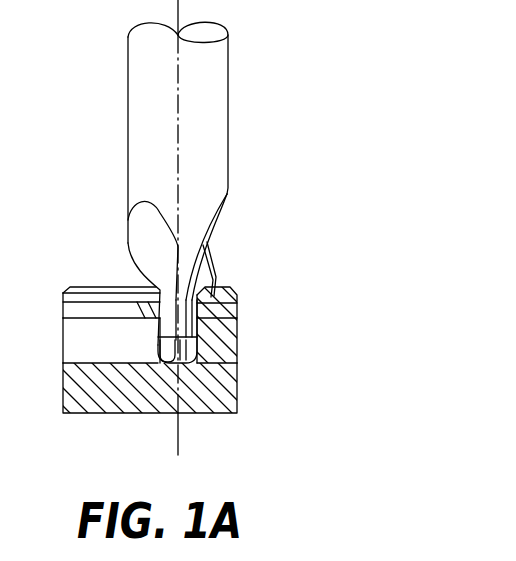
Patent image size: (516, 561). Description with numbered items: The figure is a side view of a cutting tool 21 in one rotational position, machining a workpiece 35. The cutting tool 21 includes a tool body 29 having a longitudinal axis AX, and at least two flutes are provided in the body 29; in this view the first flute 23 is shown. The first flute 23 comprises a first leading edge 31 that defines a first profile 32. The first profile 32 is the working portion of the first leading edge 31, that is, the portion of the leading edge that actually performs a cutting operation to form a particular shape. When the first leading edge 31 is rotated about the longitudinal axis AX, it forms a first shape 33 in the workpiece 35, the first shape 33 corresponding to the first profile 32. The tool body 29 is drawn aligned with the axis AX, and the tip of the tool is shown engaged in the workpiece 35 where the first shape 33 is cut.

The cutting tool 21 is at (253, 135).
The tool body 29 is at (228, 187).
The first flute 23 is at (195, 275).
The first profile 32 is at (203, 305).
The first leading edge 31 is at (202, 325).
The first shape 33 is at (165, 338).
The workpiece 35 is at (228, 388).
The longitudinal axis AX is at (178, 440).